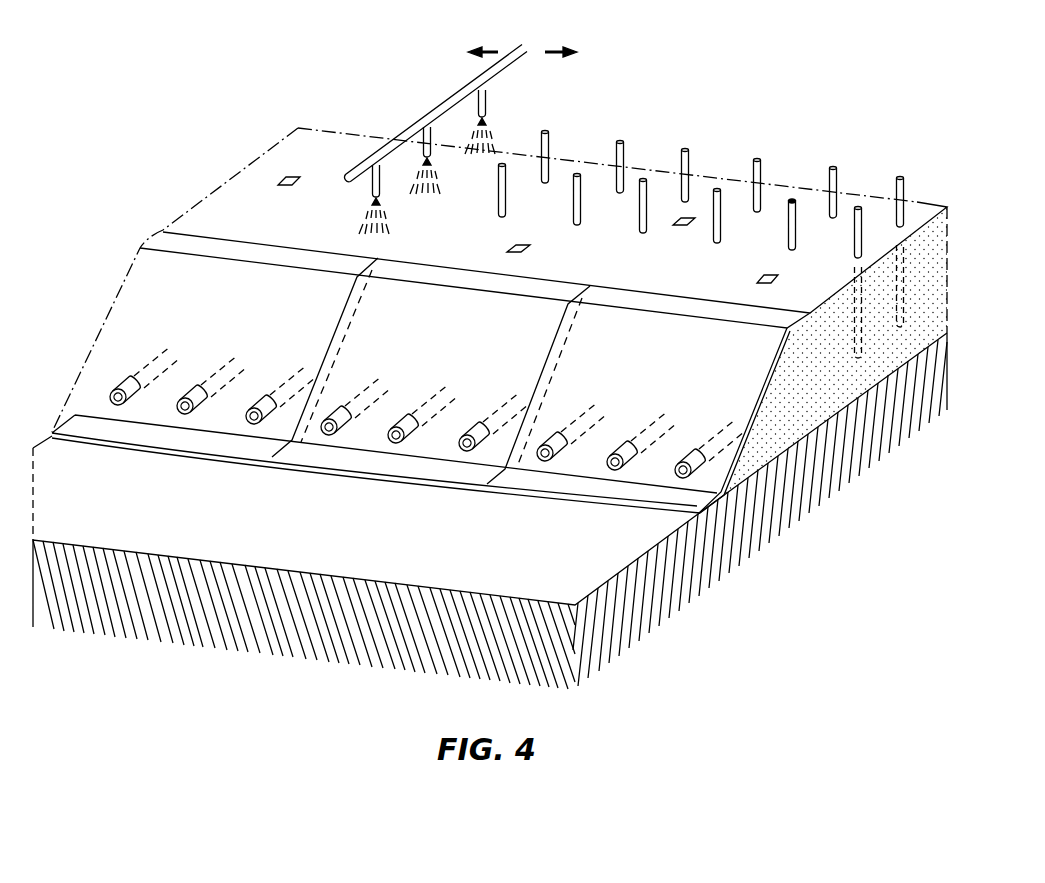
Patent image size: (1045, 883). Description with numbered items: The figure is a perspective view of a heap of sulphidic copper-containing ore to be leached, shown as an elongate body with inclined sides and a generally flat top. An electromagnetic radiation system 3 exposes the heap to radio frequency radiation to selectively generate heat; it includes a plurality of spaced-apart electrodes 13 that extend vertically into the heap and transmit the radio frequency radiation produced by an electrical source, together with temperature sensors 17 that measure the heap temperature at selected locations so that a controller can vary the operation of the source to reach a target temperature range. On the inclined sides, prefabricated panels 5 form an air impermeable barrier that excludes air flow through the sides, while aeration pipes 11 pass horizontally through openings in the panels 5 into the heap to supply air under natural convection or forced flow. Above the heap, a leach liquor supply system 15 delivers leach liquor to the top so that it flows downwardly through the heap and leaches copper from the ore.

The electromagnetic radiation system 3 is at (690, 98).
The prefabricated panels 5 is at (378, 416).
The aeration pipes 11 is at (190, 392).
The electrodes 13 is at (793, 200).
The leach liquor supply system 15 is at (428, 102).
The temperature sensors 17 is at (285, 176).